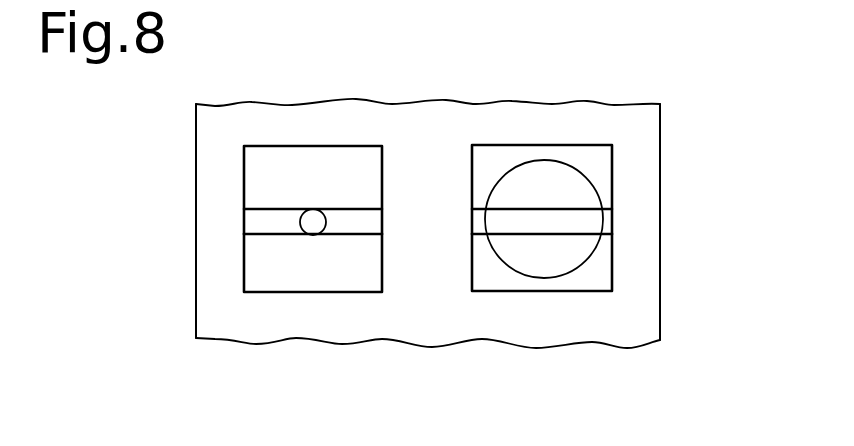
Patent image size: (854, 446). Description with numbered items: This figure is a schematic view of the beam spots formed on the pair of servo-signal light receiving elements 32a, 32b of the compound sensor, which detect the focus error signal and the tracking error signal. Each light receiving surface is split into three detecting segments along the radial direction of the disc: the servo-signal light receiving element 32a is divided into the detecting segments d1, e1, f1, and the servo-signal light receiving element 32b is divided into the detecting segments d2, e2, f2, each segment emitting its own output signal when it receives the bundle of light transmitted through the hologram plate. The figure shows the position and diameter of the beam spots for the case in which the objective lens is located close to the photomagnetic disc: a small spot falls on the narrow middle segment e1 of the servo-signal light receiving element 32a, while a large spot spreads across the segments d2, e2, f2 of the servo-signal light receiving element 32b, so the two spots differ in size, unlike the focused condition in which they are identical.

The servo-signal light receiving element 32a is at (240, 221).
The servo-signal light receiving element 32b is at (624, 218).
The detecting segment d1 is at (258, 165).
The detecting segment d2 is at (604, 167).
The detecting segment e1 is at (252, 223).
The detecting segment e2 is at (608, 227).
The detecting segment f1 is at (253, 261).
The detecting segment f2 is at (605, 274).